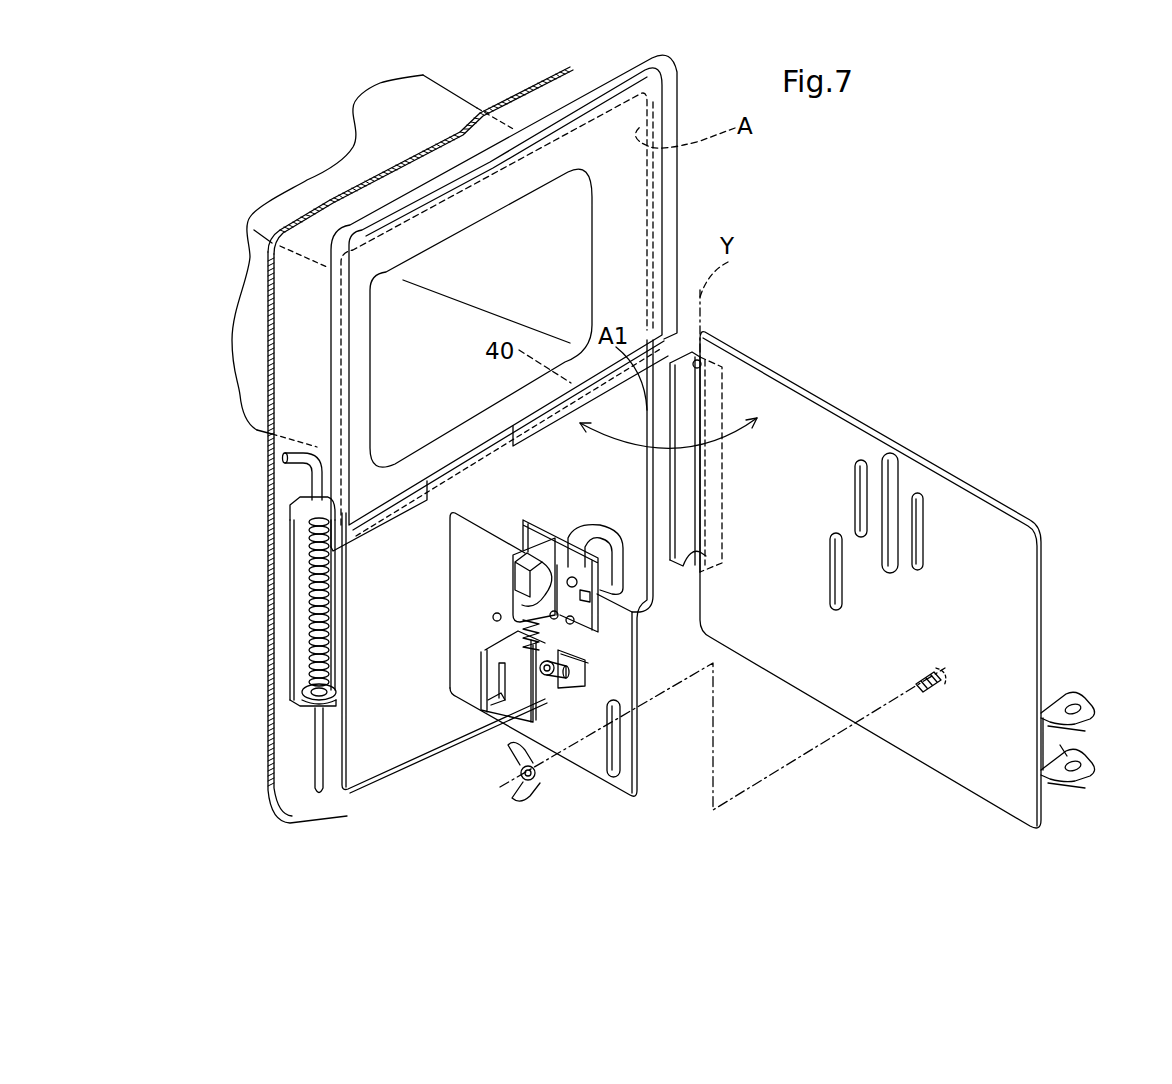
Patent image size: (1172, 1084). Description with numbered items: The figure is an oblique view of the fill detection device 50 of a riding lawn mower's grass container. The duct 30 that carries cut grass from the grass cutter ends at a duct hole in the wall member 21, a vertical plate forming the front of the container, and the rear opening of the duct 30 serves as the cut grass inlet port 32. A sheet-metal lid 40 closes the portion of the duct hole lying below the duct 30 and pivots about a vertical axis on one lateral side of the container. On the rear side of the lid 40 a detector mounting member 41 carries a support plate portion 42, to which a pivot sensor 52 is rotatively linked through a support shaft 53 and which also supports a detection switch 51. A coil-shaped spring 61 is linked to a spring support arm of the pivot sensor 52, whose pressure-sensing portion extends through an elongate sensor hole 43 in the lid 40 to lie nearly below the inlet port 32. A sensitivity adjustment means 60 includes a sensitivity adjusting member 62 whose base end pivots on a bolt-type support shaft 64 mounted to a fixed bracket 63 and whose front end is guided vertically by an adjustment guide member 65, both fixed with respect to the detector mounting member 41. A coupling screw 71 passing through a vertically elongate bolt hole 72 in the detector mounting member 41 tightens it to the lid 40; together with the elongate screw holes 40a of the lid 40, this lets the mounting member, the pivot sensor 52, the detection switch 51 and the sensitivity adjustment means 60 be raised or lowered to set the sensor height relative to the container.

The duct 30 is at (373, 130).
The wall member 21 is at (287, 750).
The cut grass inlet port 32 is at (408, 410).
The lid 40 is at (1030, 613).
The screw holes 40a is at (832, 547).
The sensor hole 43 is at (898, 567).
The detector mounting member 41 is at (636, 727).
The support plate portion 42 is at (543, 540).
The pivot sensor 52 is at (602, 525).
The support shaft 53 is at (579, 580).
The fill detection device 50 is at (489, 586).
The detection switch 51 is at (513, 583).
The coil-shaped spring 61 is at (518, 618).
The adjustment guide member 65 is at (498, 675).
The fixed bracket 63 is at (586, 655).
The support shaft 64 is at (568, 680).
The sensitivity adjusting member 62 is at (503, 707).
The sensitivity adjustment means 60 is at (469, 732).
The bolt hole 72 is at (612, 757).
The coupling screw 71 is at (530, 793).